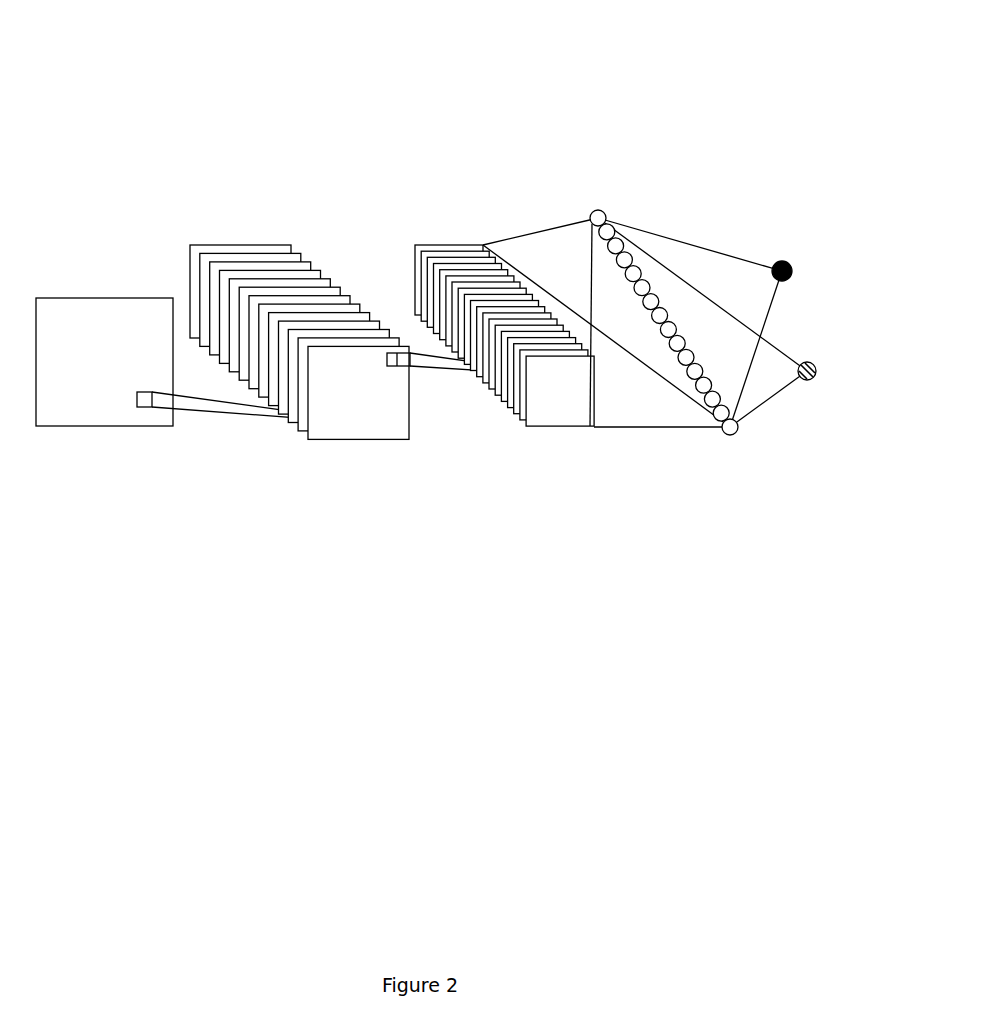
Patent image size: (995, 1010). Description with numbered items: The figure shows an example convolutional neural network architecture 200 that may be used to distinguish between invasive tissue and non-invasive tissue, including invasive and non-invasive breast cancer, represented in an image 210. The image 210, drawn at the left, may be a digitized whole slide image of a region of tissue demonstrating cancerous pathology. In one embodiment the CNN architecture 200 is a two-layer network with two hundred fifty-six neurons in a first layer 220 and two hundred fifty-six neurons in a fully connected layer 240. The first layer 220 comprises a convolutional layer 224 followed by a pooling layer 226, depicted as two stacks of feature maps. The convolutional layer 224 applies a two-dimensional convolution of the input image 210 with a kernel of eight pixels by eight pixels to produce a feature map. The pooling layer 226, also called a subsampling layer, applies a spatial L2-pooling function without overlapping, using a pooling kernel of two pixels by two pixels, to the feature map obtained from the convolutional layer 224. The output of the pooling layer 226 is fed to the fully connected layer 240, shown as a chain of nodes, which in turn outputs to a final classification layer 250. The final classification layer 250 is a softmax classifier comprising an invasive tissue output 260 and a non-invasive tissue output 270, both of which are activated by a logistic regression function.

The CNN architecture 200 is at (266, 100).
The image 210 is at (108, 452).
The first layer 220 is at (455, 399).
The convolutional layer 224 is at (420, 460).
The pooling layer 226 is at (572, 375).
The fully connected layer 240 is at (651, 460).
The final classification layer 250 is at (806, 333).
The invasive tissue output 260 is at (782, 244).
The non-invasive tissue output 270 is at (810, 394).